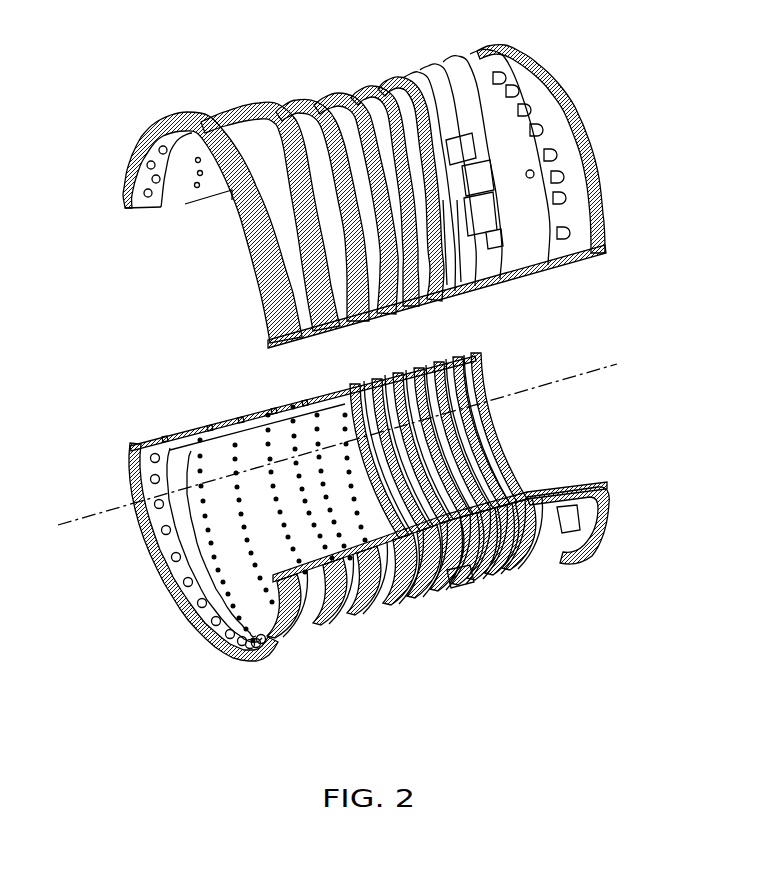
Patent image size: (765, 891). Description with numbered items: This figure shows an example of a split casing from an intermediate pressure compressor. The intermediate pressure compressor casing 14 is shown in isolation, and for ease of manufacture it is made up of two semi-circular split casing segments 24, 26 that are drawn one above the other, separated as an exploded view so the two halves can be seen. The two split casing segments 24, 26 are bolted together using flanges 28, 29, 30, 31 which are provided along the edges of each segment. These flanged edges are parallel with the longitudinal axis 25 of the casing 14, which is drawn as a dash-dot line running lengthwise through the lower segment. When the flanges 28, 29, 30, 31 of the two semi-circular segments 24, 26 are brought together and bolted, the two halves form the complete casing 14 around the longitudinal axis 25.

The intermediate pressure compressor casing 14 is at (578, 86).
The split casing segment 24 is at (255, 110).
The longitudinal axis 25 is at (115, 520).
The split casing segment 26 is at (403, 598).
The flange 28 is at (405, 307).
The flange 29 is at (182, 200).
The flange 30 is at (557, 490).
The flange 31 is at (208, 425).